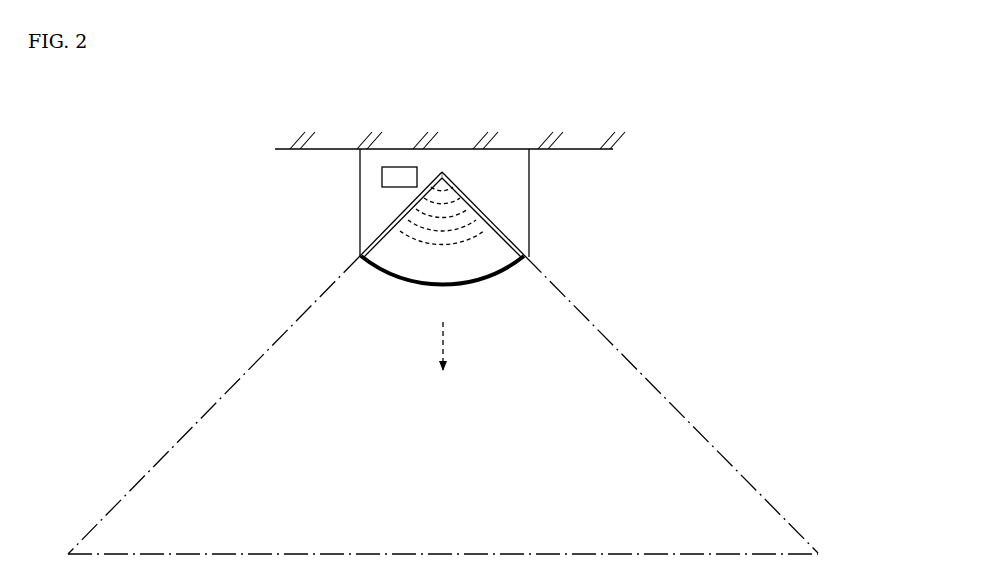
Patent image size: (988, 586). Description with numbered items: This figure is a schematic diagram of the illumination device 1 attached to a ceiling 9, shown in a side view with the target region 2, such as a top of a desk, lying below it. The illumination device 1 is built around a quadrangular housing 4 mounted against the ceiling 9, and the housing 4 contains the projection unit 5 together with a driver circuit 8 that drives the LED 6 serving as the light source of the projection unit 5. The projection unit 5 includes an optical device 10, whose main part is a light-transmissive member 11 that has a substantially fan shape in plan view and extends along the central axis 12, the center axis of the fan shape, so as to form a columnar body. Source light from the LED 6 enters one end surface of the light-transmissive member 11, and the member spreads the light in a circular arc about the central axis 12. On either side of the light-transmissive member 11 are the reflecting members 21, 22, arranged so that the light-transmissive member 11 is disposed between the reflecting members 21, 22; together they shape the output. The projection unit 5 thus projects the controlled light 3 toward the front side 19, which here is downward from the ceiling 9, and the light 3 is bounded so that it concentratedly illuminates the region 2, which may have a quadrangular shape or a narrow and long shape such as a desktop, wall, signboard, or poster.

The illumination device 1 is at (432, 193).
The region 2 is at (553, 553).
The light 3 is at (612, 343).
The housing 4 is at (531, 175).
The projection unit 5 is at (421, 193).
The LED 6 is at (466, 186).
The driver circuit 8 is at (388, 178).
The ceiling 9 is at (589, 126).
The optical device 10 is at (374, 235).
The light-transmissive member 11 is at (507, 274).
The central axis 12 is at (443, 171).
The front side 19 is at (443, 344).
The reflecting member 21 is at (493, 216).
The reflecting member 22 is at (400, 211).